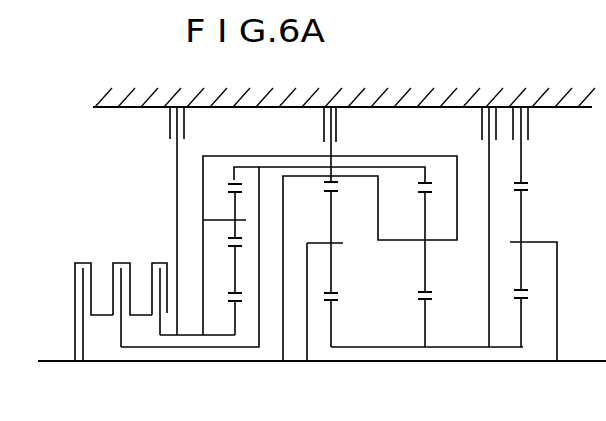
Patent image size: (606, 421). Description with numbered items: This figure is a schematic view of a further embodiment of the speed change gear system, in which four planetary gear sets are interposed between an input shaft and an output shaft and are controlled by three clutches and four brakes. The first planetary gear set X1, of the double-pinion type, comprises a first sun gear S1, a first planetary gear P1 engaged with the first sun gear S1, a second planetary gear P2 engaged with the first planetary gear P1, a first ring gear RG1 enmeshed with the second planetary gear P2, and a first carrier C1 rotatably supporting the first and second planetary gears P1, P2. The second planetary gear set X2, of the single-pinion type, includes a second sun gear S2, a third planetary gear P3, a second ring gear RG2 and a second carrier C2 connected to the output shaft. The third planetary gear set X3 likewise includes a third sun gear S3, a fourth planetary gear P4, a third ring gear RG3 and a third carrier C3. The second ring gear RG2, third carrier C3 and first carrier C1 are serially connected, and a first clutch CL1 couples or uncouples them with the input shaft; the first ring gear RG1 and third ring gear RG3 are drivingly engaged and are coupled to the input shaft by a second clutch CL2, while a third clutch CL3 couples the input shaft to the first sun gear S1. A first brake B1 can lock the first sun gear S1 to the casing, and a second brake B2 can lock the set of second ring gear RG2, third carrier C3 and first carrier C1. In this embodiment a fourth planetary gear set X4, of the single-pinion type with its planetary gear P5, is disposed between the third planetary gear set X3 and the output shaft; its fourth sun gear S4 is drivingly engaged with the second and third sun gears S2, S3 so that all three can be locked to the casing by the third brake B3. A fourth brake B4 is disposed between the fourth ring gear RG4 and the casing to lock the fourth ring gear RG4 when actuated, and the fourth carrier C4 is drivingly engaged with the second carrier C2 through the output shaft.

The first clutch CL1 is at (77, 300).
The second clutch CL2 is at (117, 293).
The third clutch CL3 is at (148, 287).
The first brake B1 is at (190, 221).
The second brake B2 is at (342, 144).
The third brake B3 is at (471, 227).
The fourth brake B4 is at (533, 145).
The first ring gear RG1 is at (237, 183).
The second ring gear RG2 is at (326, 183).
The third ring gear RG3 is at (420, 173).
The fourth ring gear RG4 is at (523, 164).
The first carrier C1 is at (220, 221).
The second carrier C2 is at (322, 241).
The third carrier C3 is at (398, 242).
The fourth carrier C4 is at (541, 240).
The first planetary gear P1 is at (235, 283).
The second planetary gear P2 is at (236, 207).
The third planetary gear P3 is at (331, 257).
The fourth planetary gear P4 is at (428, 257).
The fifth planetary gear P5 is at (524, 197).
The first planetary gear set X1 is at (233, 311).
The second planetary gear set X2 is at (327, 311).
The third planetary gear set X3 is at (422, 311).
The fourth planetary gear set X4 is at (520, 311).
The first sun gear S1 is at (240, 316).
The second sun gear S2 is at (336, 322).
The third sun gear S3 is at (430, 320).
The fourth sun gear S4 is at (526, 320).